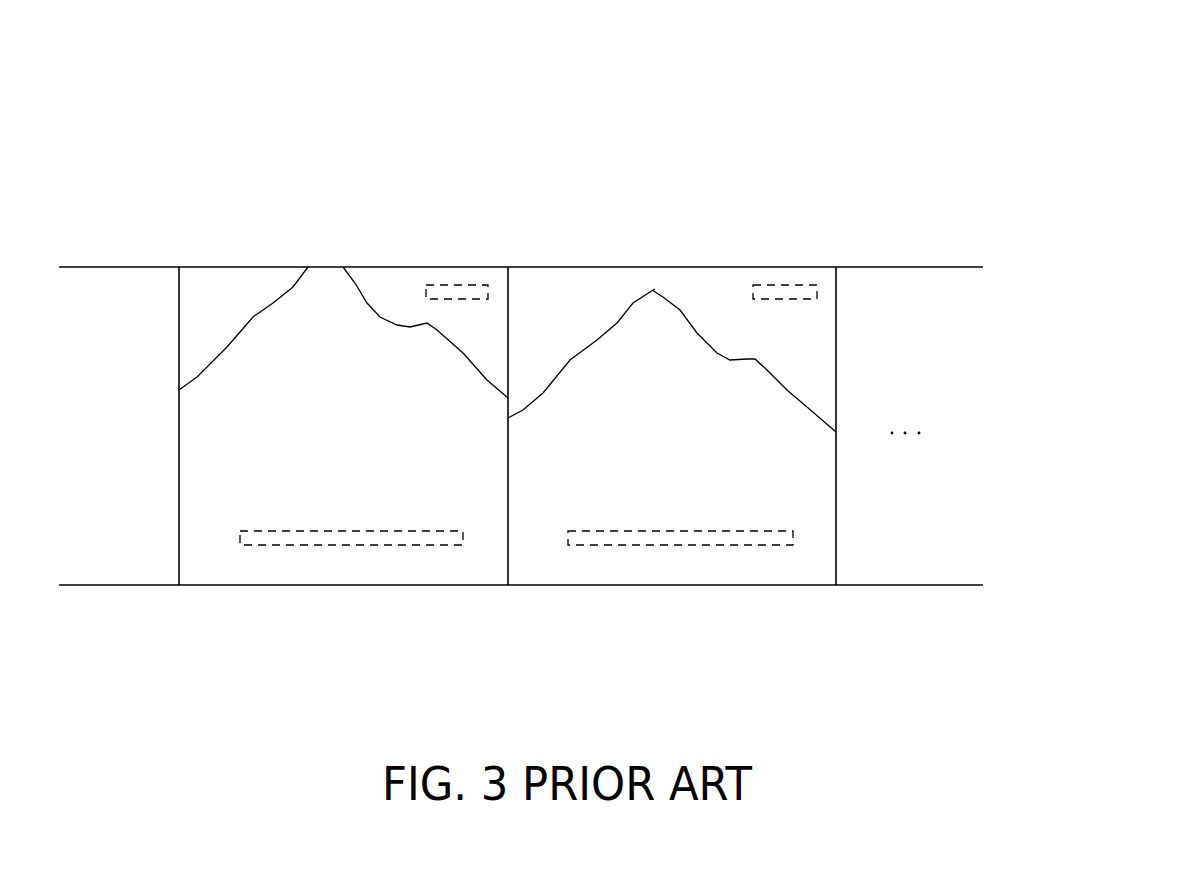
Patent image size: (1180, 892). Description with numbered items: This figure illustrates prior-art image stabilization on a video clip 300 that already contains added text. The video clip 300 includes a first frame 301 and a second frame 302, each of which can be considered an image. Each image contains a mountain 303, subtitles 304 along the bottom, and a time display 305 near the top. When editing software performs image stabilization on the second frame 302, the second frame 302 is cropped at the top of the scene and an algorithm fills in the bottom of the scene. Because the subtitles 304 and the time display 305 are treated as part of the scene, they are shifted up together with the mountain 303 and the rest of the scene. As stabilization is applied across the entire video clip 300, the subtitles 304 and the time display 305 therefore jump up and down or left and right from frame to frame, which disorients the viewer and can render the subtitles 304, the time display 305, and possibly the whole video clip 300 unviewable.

The video clip 300 is at (1025, 120).
The first frame 301 is at (232, 288).
The second frame 302 is at (560, 288).
The mountain 303 is at (357, 313).
The subtitles 304 is at (375, 545).
The time display 305 is at (463, 283).